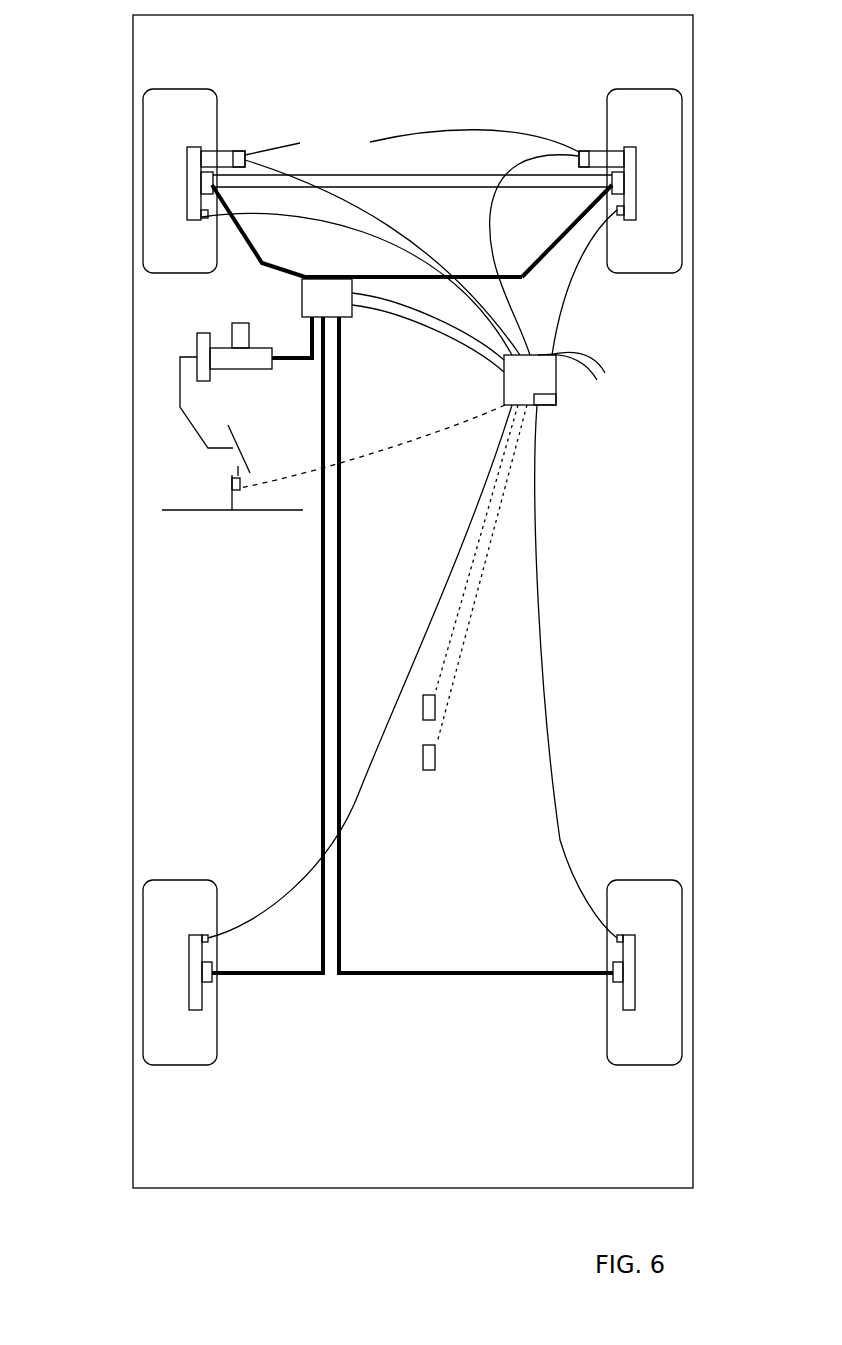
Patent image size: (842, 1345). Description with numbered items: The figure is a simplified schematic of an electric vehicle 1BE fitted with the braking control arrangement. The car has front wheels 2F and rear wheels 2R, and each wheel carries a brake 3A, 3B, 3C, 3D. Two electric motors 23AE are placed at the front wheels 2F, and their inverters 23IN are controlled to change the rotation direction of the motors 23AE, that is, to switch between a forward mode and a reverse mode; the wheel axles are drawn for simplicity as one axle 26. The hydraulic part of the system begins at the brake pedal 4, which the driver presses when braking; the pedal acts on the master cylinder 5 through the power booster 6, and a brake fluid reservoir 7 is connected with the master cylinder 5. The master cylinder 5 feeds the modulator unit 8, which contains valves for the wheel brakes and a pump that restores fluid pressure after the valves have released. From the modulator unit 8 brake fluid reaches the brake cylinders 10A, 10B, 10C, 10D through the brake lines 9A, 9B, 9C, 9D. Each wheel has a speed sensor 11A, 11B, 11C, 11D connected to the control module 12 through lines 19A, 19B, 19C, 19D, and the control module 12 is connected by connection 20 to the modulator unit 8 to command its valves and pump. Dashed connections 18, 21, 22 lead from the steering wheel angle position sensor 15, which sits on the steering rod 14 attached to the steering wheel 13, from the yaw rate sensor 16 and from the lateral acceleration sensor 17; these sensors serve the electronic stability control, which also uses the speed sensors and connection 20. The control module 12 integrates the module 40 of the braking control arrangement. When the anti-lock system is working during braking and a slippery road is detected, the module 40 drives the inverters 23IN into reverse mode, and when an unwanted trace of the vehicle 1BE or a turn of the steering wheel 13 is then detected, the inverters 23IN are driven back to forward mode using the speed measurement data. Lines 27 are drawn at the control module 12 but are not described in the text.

The electric vehicle 1BE is at (695, 67).
The front wheels 2F is at (187, 89).
The rear wheels 2R is at (180, 1045).
The brake 3A is at (657, 179).
The brake 3B is at (187, 157).
The brake 3C is at (188, 953).
The brake 3D is at (627, 938).
The brake pedal 4 is at (233, 437).
The master cylinder 5 is at (258, 370).
The power booster 6 is at (197, 352).
The brake fluid reservoir 7 is at (247, 333).
The modulator unit 8 is at (336, 310).
The brake line 9A is at (578, 218).
The brake line 9B is at (264, 263).
The brake line 9C is at (305, 982).
The brake line 9D is at (505, 980).
The brake cylinder 10A is at (626, 190).
The brake cylinder 10B is at (203, 173).
The brake cylinder 10C is at (210, 983).
The brake cylinder 10D is at (612, 975).
The speed sensor 11A is at (621, 216).
The speed sensor 11B is at (205, 219).
The speed sensor 11C is at (204, 933).
The speed sensor 11D is at (619, 933).
The control module 12 is at (546, 391).
The steering wheel 13 is at (204, 511).
The steering rod 14 is at (230, 501).
The steering wheel angle position sensor 15 is at (238, 476).
The yaw rate sensor 16 is at (427, 771).
The lateral acceleration sensor 17 is at (428, 702).
The connection 18 is at (414, 450).
The line 19A is at (558, 308).
The line 19B is at (342, 224).
The line 19C is at (310, 863).
The line 19D is at (552, 805).
The connection 20 is at (403, 308).
The connection 21 is at (463, 676).
The connection 22 is at (470, 605).
The electric motor 23AE is at (228, 165).
The inverter 23IN is at (412, 144).
The axle 26 is at (437, 177).
The lines 27 is at (580, 380).
The module 40 is at (543, 407).